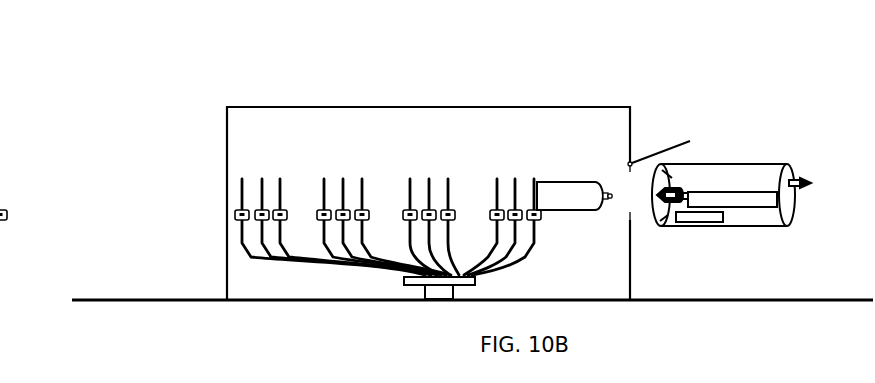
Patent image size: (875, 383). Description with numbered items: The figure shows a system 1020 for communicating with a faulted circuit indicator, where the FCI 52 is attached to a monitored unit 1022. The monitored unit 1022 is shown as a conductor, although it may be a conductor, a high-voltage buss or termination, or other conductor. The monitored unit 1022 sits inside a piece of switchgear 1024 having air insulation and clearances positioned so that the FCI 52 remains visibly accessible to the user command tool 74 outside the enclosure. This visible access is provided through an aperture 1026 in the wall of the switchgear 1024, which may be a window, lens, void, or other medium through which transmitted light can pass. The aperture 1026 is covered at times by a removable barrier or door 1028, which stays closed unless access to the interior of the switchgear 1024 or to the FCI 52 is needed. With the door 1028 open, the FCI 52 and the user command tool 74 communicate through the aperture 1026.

The launch system 1020 is at (208, 54).
The monitored unit 1022 is at (537, 184).
The switchgear 1024 is at (227, 146).
The aperture 1026 is at (638, 210).
The door 1028 is at (675, 140).
The FCI 52 is at (553, 211).
The user command tool 74 is at (763, 165).